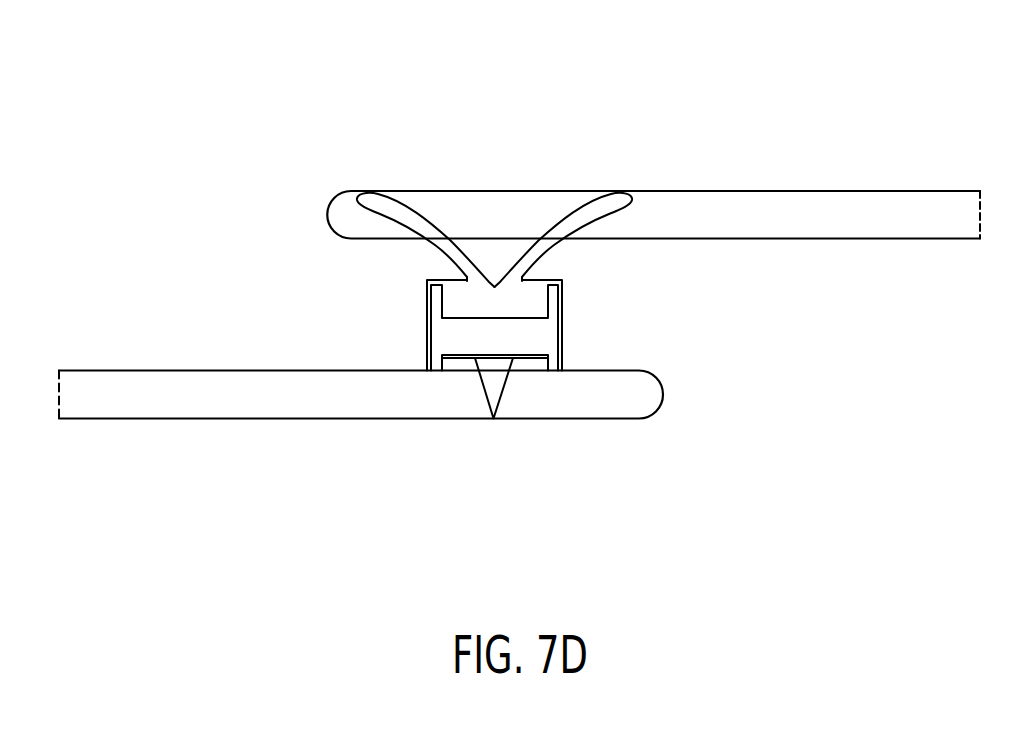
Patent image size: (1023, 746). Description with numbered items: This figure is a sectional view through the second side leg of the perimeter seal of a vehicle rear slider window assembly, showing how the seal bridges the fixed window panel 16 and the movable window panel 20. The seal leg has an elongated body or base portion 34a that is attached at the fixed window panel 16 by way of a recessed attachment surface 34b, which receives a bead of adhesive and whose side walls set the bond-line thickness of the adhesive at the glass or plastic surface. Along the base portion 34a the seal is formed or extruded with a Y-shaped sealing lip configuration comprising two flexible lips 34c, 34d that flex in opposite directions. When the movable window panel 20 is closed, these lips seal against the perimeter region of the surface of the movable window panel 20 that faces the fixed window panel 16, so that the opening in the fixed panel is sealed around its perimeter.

The fixed window panel 16 is at (233, 418).
The movable window panel 20 is at (805, 191).
The base portion 34a is at (452, 333).
The attachment surface 34b is at (512, 358).
The flexible lip 34c is at (397, 210).
The flexible lip 34d is at (593, 213).